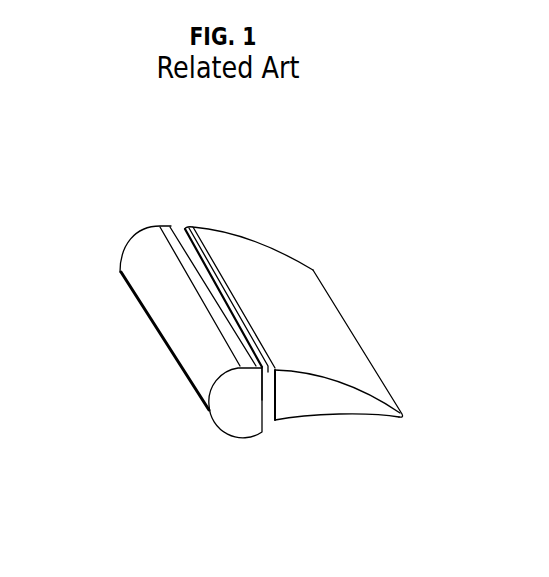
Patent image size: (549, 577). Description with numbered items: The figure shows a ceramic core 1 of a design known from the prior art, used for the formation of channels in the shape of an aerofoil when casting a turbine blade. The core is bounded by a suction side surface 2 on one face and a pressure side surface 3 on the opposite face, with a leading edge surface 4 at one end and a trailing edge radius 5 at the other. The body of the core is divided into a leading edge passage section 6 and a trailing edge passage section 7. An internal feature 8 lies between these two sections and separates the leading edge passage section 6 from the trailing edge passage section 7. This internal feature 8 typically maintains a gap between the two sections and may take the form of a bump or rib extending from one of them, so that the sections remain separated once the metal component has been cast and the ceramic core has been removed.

The ceramic core 1 is at (258, 336).
The suction side surface 2 is at (282, 297).
The pressure side surface 3 is at (330, 343).
The leading edge surface 4 is at (172, 333).
The trailing edge radius 5 is at (355, 323).
The leading edge passage section 6 is at (238, 392).
The trailing edge passage section 7 is at (340, 393).
The internal feature 8 is at (268, 402).